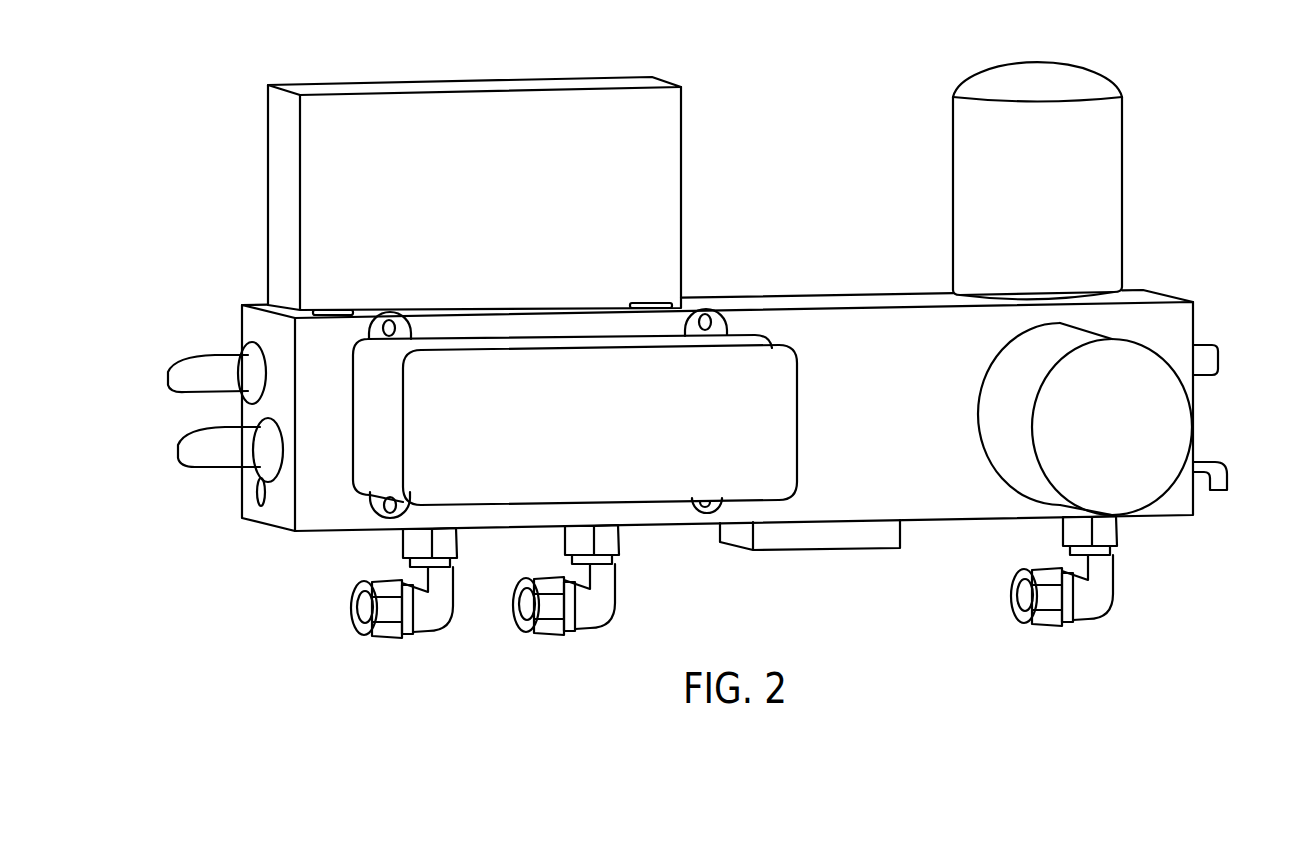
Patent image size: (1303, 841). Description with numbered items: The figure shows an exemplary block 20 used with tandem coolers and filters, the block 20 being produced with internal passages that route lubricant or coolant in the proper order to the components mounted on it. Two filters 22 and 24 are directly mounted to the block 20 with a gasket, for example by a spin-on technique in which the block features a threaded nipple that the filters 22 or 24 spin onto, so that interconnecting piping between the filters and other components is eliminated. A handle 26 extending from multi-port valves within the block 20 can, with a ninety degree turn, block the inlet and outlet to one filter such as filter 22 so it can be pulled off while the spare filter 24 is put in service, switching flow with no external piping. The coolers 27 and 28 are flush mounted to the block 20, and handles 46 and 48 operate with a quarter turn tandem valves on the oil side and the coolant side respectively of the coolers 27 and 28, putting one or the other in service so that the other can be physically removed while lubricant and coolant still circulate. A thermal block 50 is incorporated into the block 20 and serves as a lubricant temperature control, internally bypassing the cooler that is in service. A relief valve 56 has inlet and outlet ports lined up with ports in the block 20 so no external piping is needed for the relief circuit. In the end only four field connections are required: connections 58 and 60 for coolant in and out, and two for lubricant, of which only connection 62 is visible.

The block 20 is at (886, 297).
The filter 22 is at (1125, 193).
The filter 24 is at (1167, 490).
The handle 26 is at (1207, 453).
The cooler 27 is at (497, 211).
The cooler 28 is at (592, 437).
The handle 46 is at (166, 368).
The handle 48 is at (176, 440).
The thermal block 50 is at (825, 532).
The relief valve 56 is at (1220, 358).
The connection 58 is at (415, 635).
The connection 60 is at (577, 632).
The connection 62 is at (1076, 622).